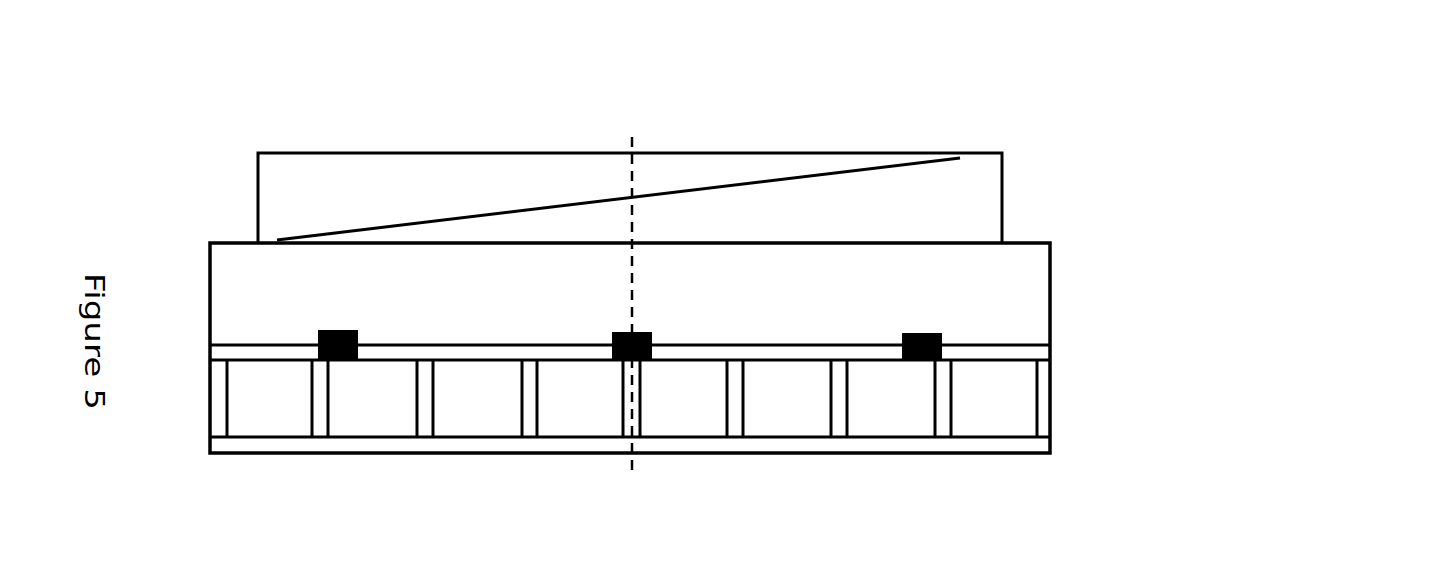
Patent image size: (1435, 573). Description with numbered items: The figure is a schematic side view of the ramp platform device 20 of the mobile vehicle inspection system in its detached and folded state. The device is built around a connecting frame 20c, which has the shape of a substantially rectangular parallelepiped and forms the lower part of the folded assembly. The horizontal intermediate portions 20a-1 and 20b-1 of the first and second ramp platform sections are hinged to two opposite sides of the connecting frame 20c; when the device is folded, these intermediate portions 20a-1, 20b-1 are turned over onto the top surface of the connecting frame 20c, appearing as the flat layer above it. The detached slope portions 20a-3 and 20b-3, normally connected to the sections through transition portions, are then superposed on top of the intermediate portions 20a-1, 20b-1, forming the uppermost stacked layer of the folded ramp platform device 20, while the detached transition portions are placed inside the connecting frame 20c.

The ramp platform device 20 is at (1005, 315).
The slope portions 20a-3 is at (618, 141).
The slope portions 20b-3 is at (690, 217).
The horizontal intermediate portion 20a-1 is at (807, 328).
The horizontal intermediate portion 20b-1 is at (1027, 318).
The connecting frame 20c is at (1020, 418).